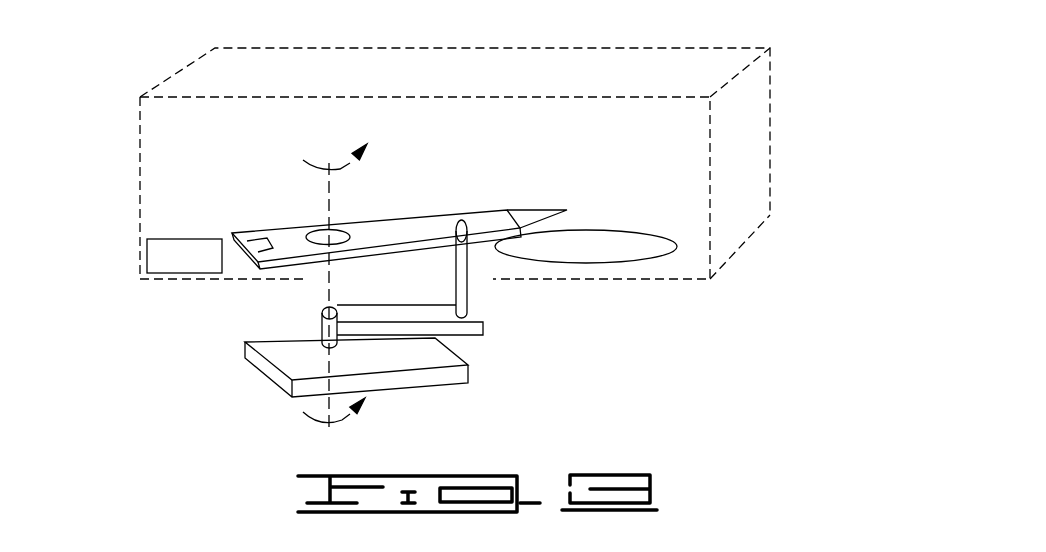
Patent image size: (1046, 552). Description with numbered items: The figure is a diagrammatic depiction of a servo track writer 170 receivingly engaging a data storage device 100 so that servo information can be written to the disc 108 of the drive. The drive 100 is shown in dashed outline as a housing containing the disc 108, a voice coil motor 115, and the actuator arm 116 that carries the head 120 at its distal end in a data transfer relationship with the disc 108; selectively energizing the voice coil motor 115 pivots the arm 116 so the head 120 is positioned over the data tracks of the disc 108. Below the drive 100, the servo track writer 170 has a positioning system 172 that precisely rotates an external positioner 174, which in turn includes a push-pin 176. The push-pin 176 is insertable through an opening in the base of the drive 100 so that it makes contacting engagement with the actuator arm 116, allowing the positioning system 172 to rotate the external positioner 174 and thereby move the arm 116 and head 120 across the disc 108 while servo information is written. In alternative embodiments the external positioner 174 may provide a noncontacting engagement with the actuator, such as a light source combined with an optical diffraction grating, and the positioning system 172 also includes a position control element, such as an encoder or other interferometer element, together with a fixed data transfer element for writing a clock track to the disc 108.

The data storage device 100 is at (752, 263).
The storage medium 108 is at (643, 233).
The voice coil motor 115 is at (165, 239).
The arm 116 is at (432, 215).
The head 120 is at (567, 210).
The servo track writer 170 is at (523, 370).
The positioning system 172 is at (413, 388).
The external positioner 174 is at (483, 325).
The push-pin 176 is at (467, 272).